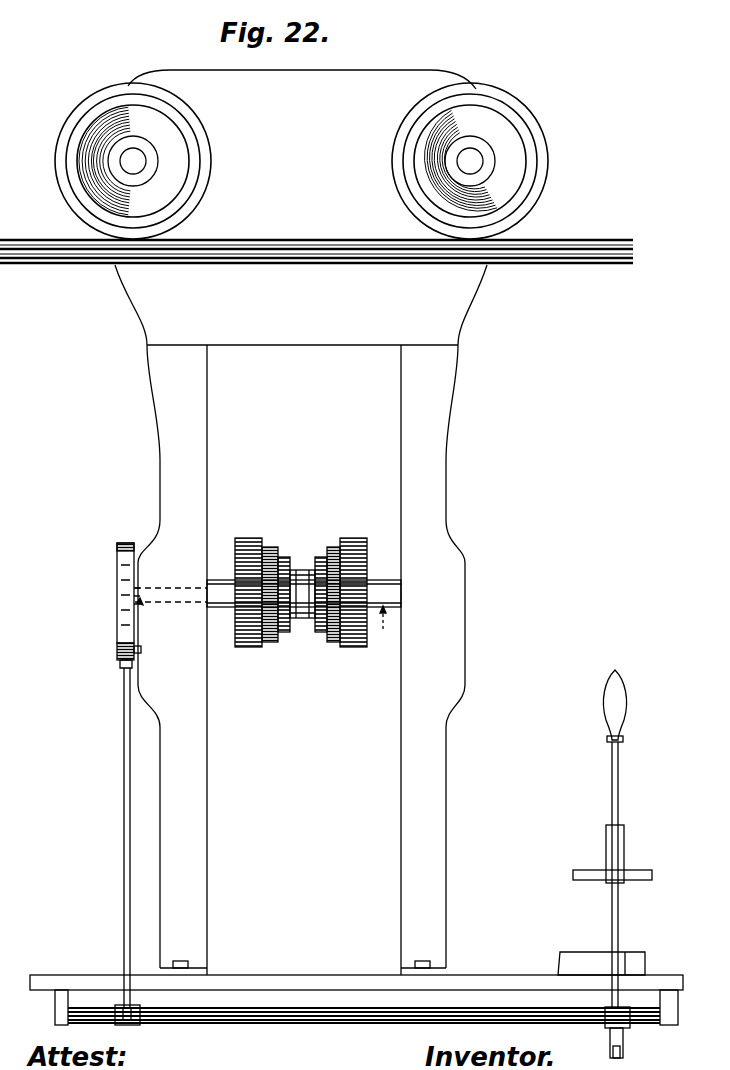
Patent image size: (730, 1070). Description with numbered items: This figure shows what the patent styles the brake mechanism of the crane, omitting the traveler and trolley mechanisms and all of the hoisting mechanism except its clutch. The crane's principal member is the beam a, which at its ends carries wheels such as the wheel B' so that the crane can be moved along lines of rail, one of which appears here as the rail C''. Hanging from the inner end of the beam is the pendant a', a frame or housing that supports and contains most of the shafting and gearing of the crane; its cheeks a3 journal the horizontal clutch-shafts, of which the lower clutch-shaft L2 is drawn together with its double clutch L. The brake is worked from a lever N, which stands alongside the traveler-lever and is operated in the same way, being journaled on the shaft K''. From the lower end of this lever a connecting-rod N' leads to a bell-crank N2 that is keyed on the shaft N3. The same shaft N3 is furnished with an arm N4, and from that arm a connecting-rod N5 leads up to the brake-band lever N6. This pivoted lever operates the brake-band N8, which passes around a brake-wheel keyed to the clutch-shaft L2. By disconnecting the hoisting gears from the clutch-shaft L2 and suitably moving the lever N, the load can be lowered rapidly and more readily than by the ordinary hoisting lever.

The beam a is at (301, 377).
The pendant a' is at (301, 826).
The cheeks a3 is at (304, 660).
The wheel B' is at (306, 161).
The rail C'' is at (316, 240).
The lower clutch L is at (304, 585).
The lower clutch-shaft L2 is at (142, 606).
The lever N is at (612, 838).
The connecting-rod N' is at (635, 1049).
The bell-crank N2 is at (630, 1025).
The shaft N3 is at (356, 1011).
The arm N4 is at (128, 1027).
The connecting-rod N5 is at (115, 837).
The brake-band lever N6 is at (118, 649).
The brake-band N8 is at (117, 593).
The block K'' is at (601, 953).